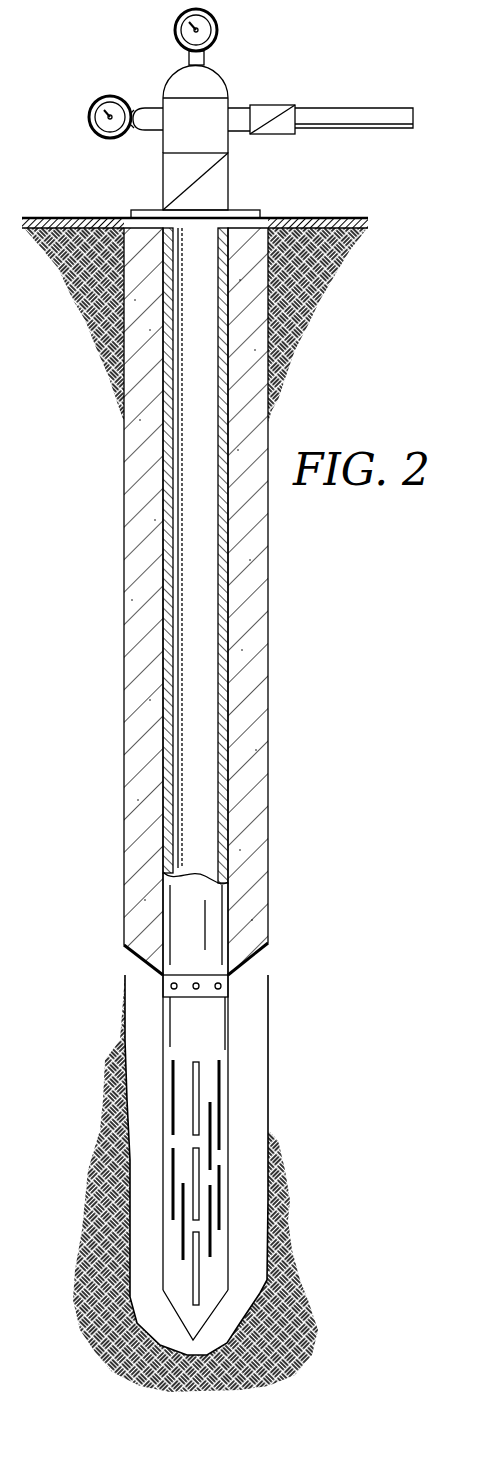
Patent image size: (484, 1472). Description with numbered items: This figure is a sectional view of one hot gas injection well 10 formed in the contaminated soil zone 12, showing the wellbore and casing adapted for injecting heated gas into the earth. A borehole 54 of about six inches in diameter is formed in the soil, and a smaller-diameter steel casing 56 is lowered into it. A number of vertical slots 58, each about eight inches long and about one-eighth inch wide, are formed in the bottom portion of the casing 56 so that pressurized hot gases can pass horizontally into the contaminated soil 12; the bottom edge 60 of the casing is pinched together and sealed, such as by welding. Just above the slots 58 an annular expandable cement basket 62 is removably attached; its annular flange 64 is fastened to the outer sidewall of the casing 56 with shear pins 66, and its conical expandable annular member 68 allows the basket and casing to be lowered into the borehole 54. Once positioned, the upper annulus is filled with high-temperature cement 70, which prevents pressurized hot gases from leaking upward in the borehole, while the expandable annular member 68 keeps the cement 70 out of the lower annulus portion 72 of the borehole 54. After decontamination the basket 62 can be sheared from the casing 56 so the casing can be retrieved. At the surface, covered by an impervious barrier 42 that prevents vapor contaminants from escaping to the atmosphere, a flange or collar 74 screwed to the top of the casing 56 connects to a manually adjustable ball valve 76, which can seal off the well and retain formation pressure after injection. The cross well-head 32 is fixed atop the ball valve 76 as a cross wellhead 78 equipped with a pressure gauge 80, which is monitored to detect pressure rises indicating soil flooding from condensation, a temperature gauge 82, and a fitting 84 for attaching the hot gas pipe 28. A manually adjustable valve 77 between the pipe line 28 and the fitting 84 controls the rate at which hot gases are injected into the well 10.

The hot gas injection well 10 is at (326, 574).
The contaminated soil zone 12 is at (88, 629).
The hot gas pipe 28 is at (380, 108).
The cross well-head 32 is at (194, 121).
The impervious barrier 42 is at (355, 218).
The borehole 54 is at (135, 1045).
The casing 56 is at (163, 470).
The vertical slots 58 is at (210, 1120).
The bottom edge 60 is at (190, 1338).
The expandable cement basket 62 is at (254, 979).
The annular flange 64 is at (185, 975).
The shear pins 66 is at (196, 990).
The conical expandable annular member 68 is at (138, 955).
The cement 70 is at (258, 688).
The lower annulus portion 72 is at (250, 1147).
The flange or collar 74 is at (135, 210).
The ball valve 76 is at (220, 188).
The manually adjustable valve 77 is at (275, 105).
The cross wellhead 78 is at (218, 137).
The pressure gauge 80 is at (218, 28).
The temperature gauge 82 is at (88, 110).
The fitting 84 is at (240, 108).